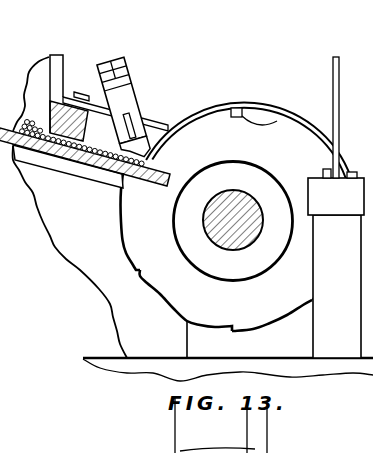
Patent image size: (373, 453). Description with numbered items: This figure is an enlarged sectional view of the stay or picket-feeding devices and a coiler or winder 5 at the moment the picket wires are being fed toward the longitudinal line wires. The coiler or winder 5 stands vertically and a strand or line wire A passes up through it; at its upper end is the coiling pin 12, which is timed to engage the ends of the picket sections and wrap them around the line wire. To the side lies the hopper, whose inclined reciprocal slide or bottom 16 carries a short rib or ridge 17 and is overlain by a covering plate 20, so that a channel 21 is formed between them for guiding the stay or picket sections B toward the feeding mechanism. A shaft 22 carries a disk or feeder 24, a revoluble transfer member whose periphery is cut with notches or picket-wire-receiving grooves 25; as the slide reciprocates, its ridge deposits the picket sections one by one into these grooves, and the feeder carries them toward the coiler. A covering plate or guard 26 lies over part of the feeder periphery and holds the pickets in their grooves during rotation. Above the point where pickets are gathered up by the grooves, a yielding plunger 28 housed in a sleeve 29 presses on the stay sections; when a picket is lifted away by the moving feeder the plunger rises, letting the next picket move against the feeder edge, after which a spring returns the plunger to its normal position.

The coiler or winder 5 is at (337, 286).
The coiling pin 12 is at (352, 178).
The inclined reciprocal slide or bottom 16 is at (150, 176).
The short extension, rib or ridge 17 is at (90, 206).
The covering plate 20 is at (62, 152).
The channel 21 is at (110, 171).
The shaft 22 is at (230, 224).
The disk, feeder or transfer member 24 is at (233, 209).
The notch or picket-wire-receiving groove 25 is at (283, 121).
The covering plate or guard 26 is at (212, 104).
The yielding plunger 28 is at (147, 152).
The sleeve 29 is at (118, 97).
The strand or line wire A is at (335, 397).
The stay or picket section B is at (112, 150).